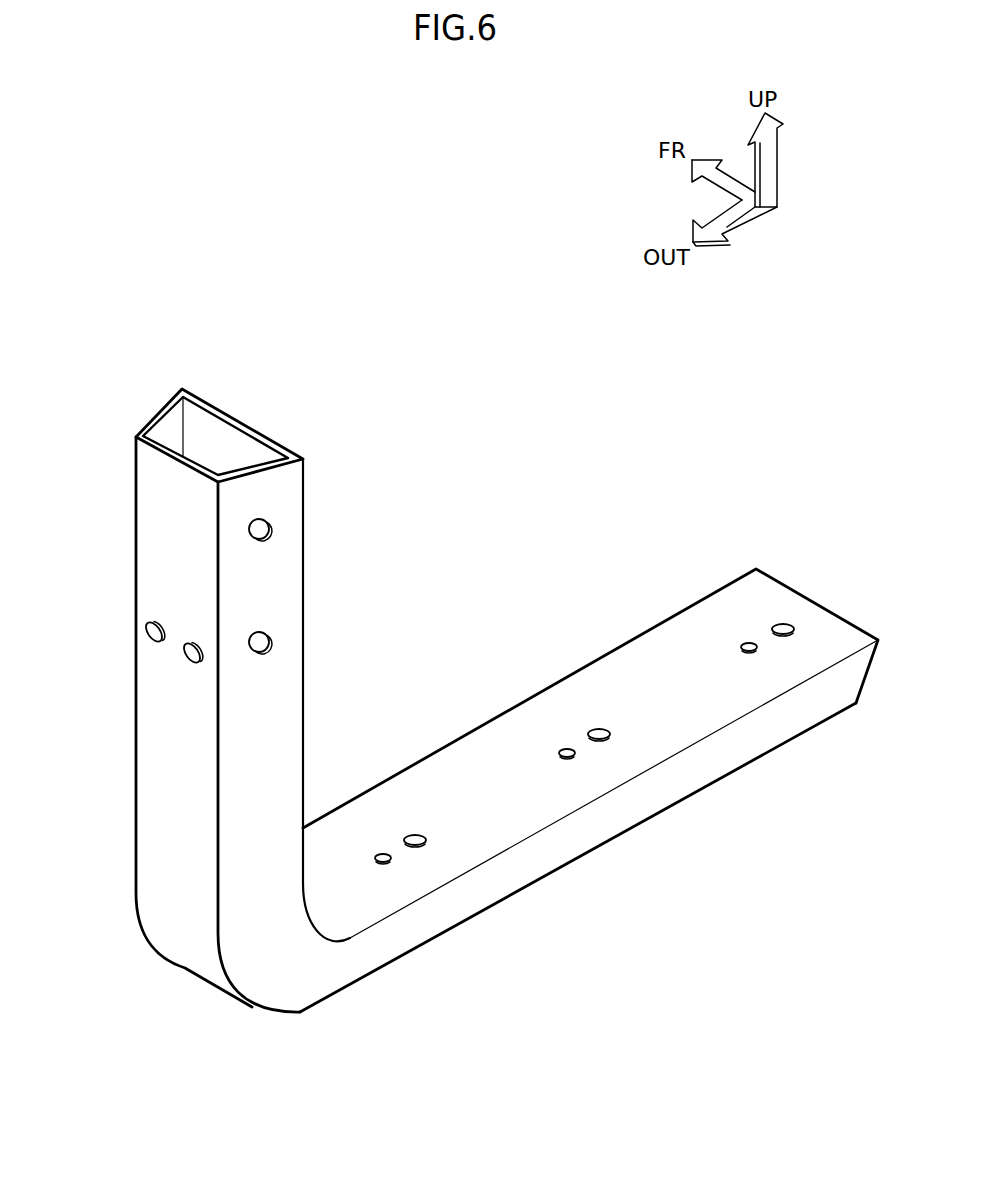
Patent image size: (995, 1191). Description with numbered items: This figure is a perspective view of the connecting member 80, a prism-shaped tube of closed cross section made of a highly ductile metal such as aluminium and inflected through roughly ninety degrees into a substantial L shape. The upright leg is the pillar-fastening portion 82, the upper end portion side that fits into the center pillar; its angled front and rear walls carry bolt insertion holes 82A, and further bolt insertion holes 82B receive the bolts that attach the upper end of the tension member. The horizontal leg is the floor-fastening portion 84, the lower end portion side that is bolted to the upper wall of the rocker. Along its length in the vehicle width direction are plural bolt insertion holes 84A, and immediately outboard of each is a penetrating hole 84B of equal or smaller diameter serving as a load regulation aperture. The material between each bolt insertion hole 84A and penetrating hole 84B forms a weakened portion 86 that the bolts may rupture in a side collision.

The connecting member 80 is at (460, 669).
The pillar-fastening portion 82 is at (224, 700).
The bolt insertion holes 82A is at (272, 538).
The bolt insertion holes 82B is at (147, 636).
The floor-fastening portion 84 is at (589, 759).
The bolt insertion holes 84A is at (415, 834).
The penetrating holes 84B is at (382, 850).
The weakened portions 86 is at (400, 848).